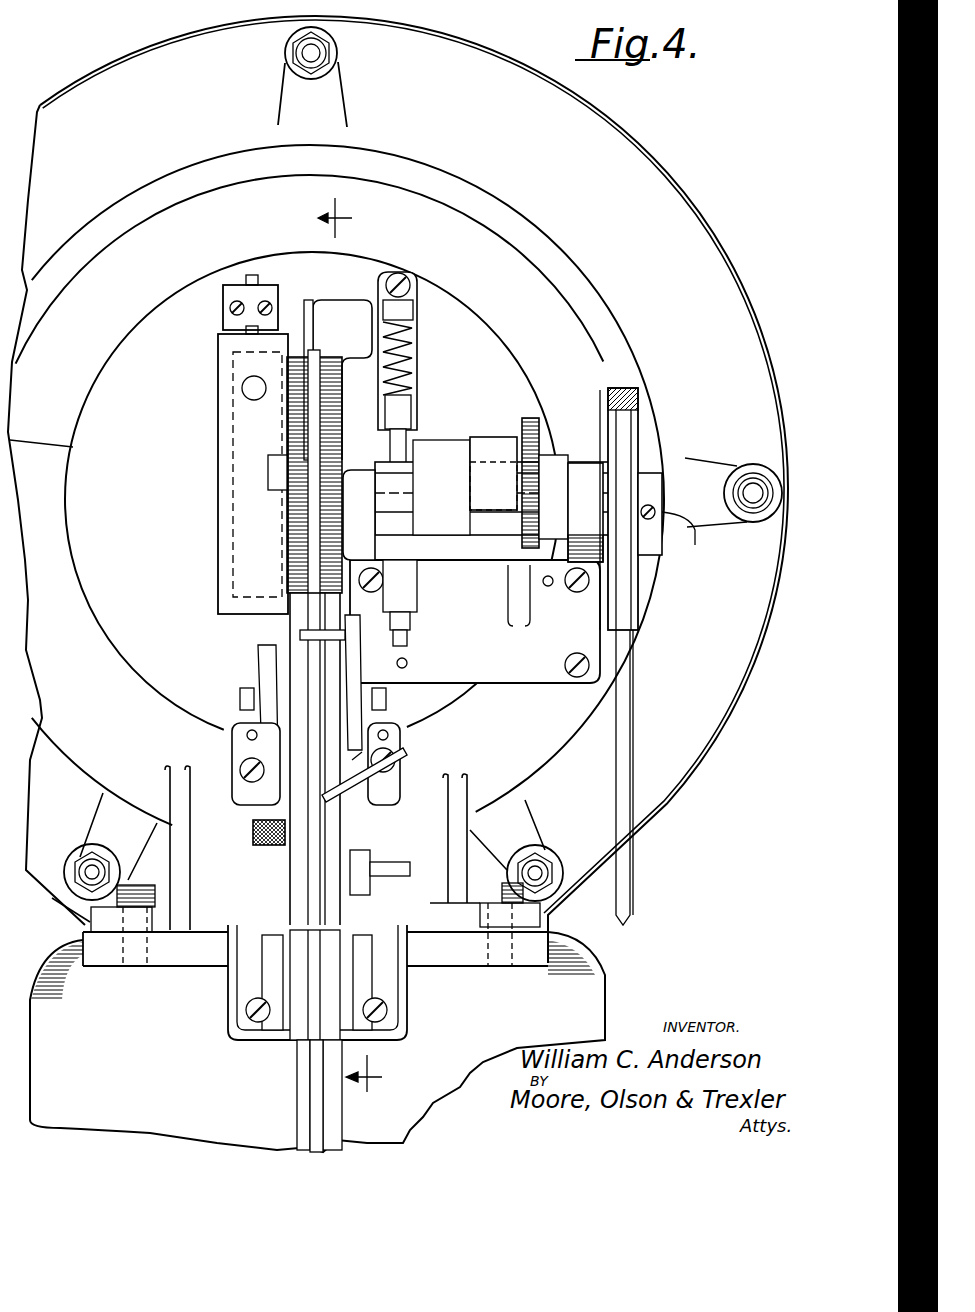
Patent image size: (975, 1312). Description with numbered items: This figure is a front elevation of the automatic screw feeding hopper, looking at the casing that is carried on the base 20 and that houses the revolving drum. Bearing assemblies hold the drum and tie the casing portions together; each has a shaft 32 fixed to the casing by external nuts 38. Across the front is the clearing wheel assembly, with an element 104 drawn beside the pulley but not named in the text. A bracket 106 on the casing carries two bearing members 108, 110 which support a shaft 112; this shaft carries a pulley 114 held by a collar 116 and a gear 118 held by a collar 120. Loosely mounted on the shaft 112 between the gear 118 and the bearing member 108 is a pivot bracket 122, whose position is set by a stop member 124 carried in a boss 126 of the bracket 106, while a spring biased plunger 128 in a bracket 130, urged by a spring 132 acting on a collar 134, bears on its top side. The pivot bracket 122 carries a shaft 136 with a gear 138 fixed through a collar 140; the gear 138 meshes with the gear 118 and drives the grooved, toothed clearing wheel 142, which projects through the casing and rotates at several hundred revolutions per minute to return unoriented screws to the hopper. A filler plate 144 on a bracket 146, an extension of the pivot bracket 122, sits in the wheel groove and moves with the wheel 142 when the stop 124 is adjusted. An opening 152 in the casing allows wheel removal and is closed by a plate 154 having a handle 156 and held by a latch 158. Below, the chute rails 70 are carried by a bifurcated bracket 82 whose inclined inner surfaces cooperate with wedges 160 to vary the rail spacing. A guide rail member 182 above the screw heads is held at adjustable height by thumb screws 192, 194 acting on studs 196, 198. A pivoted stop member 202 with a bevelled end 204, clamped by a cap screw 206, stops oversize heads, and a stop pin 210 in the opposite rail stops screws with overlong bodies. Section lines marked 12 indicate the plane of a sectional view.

The section line 12 is at (371, 645).
The base 20 is at (582, 992).
The shaft 32 is at (322, 53).
The external nut 38 is at (737, 470).
The rails 70 is at (305, 1065).
The bracket 82 is at (258, 652).
The belt 104 is at (600, 400).
The bracket 106 is at (555, 700).
The bearing member 108 is at (360, 480).
The bearing member 110 is at (582, 470).
The shaft 112 is at (704, 512).
The pulley 114 is at (635, 412).
The collar 116 is at (645, 475).
The gear 118 is at (500, 498).
The collar 120 is at (570, 592).
The pivot bracket 122 is at (487, 437).
The stop member 124 is at (417, 605).
The boss 126 is at (385, 580).
The spring biased plunger 128 is at (418, 300).
The bracket 130 is at (398, 273).
The spring 132 is at (413, 335).
The collar 134 is at (410, 412).
The shaft 136 is at (430, 462).
The gear 138 is at (533, 418).
The collar 140 is at (553, 455).
The clearing wheel 142 is at (300, 415).
The filler plate 144 is at (306, 330).
The bracket 146 is at (340, 310).
The opening 152 is at (233, 532).
The plate 154 is at (220, 382).
The knob or handle 156 is at (245, 380).
The latch 158 is at (245, 305).
The wedges 160 is at (260, 715).
The guide rail member 182 is at (295, 1052).
The thumb screw 192 is at (446, 840).
The thumb screw 194 is at (410, 637).
The stud 196 is at (360, 850).
The stud 198 is at (300, 635).
The stop member 202 is at (362, 752).
The bevelled end 204 is at (305, 765).
The cap screw 206 is at (385, 768).
The stop pin 210 is at (253, 828).